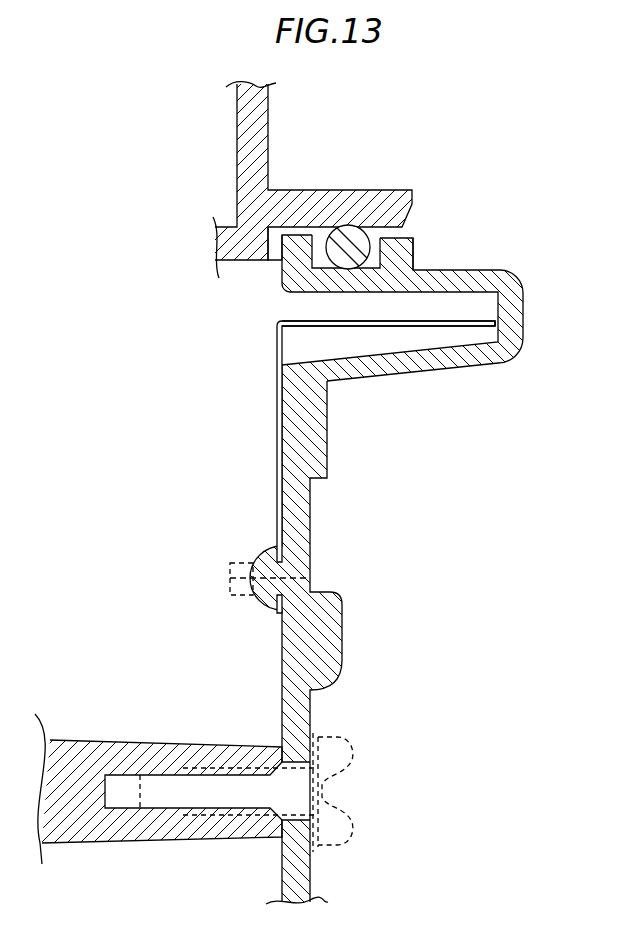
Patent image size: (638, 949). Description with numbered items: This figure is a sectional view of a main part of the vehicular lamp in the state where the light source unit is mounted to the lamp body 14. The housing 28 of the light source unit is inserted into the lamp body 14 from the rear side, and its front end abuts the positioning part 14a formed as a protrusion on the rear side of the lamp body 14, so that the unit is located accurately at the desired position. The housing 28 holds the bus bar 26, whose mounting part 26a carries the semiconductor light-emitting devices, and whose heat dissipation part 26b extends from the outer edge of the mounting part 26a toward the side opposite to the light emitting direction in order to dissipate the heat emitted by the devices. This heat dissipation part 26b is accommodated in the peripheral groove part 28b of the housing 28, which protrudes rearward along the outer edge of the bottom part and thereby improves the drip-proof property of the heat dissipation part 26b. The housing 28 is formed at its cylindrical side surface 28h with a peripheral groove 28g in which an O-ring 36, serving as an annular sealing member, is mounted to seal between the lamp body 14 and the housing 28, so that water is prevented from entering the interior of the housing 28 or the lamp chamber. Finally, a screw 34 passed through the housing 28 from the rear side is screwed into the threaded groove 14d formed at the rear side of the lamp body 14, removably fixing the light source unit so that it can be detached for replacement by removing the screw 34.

The lamp body 14 is at (237, 123).
The positioning part 14a is at (272, 263).
The threaded groove 14d is at (127, 794).
The bus bar 26 is at (265, 457).
The mounting part 26a is at (277, 387).
The heat dissipation part 26b is at (471, 313).
The housing 28 is at (478, 369).
The peripheral groove part 28b is at (306, 306).
The peripheral groove 28g is at (378, 234).
The cylindrical side surface 28h is at (420, 254).
The screw 34 is at (350, 743).
The O-ring 36 is at (318, 230).